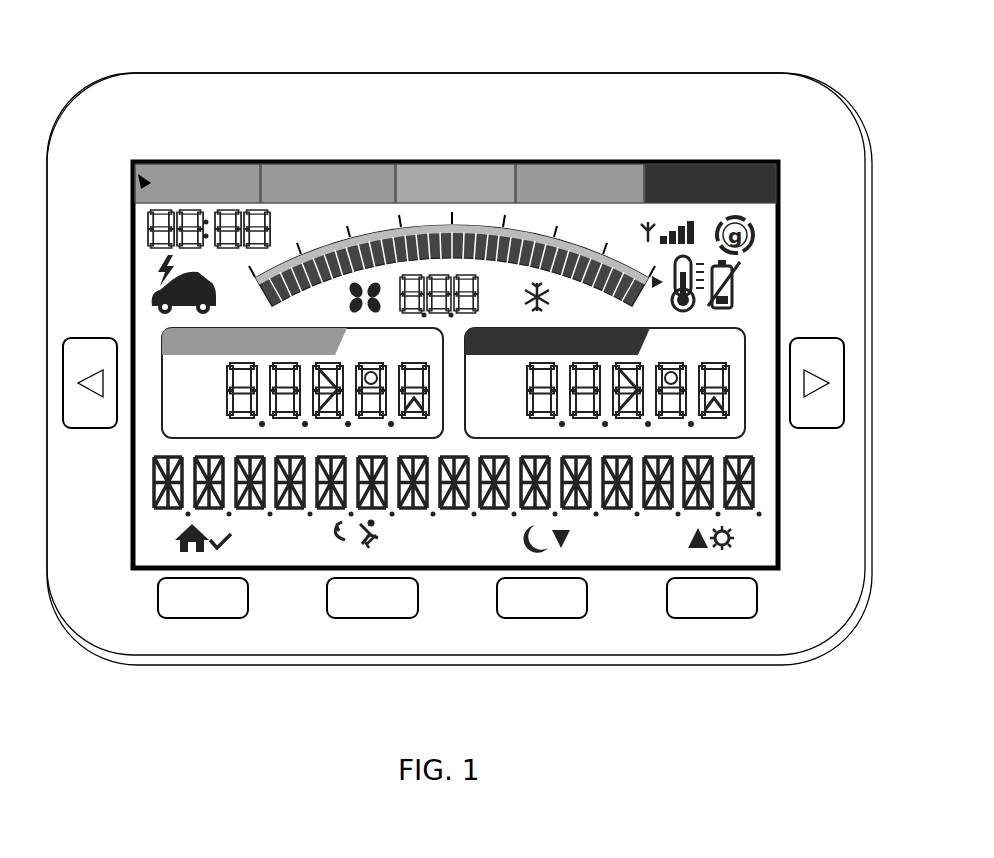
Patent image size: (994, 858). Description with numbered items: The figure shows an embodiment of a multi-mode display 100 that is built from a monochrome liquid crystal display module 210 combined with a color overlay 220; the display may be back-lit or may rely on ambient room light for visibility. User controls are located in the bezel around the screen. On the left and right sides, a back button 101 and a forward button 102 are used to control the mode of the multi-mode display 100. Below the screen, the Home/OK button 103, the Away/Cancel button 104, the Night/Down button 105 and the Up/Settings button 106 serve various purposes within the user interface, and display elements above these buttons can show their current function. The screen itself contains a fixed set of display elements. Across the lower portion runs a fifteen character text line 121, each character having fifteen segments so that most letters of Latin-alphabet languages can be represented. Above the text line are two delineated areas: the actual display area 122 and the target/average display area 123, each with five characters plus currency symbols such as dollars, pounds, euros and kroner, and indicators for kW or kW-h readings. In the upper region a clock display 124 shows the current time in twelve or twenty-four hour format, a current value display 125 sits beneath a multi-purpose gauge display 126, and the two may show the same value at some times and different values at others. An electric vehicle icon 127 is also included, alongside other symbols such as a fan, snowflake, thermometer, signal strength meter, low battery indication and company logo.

The multi-mode display 100 is at (775, 73).
The back button 101 is at (80, 338).
The forward button 102 is at (815, 338).
The Home/OK button 103 is at (193, 620).
The Away/Cancel button 104 is at (370, 620).
The Night/Down button 105 is at (557, 620).
The Up/Settings button 106 is at (706, 620).
The 15 character text line 121 is at (146, 492).
The "actual" display area 122 is at (231, 314).
The target/average display area 123 is at (602, 314).
The clock display 124 is at (300, 216).
The current value display 125 is at (440, 264).
The multi-purpose gauge display 126 is at (535, 216).
The electric vehicle (EV) icon 127 is at (175, 262).
The monochrome liquid crystal display (LCD) module 210 is at (690, 146).
The color overlay 220 is at (140, 176).